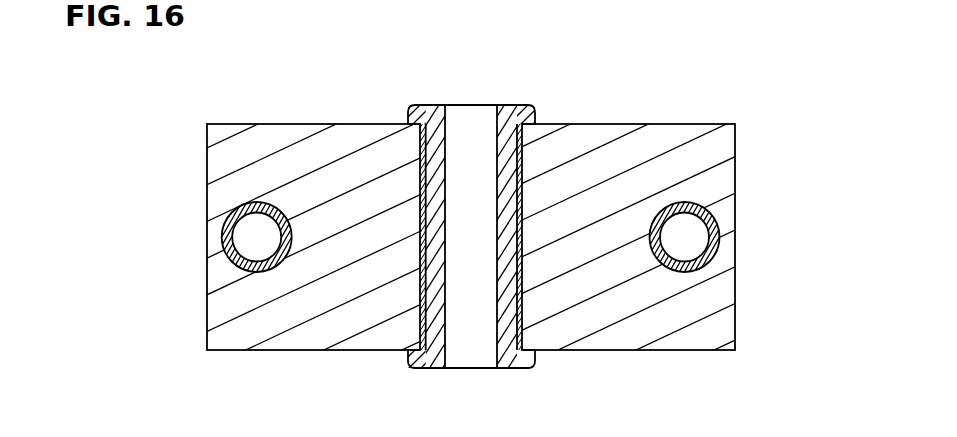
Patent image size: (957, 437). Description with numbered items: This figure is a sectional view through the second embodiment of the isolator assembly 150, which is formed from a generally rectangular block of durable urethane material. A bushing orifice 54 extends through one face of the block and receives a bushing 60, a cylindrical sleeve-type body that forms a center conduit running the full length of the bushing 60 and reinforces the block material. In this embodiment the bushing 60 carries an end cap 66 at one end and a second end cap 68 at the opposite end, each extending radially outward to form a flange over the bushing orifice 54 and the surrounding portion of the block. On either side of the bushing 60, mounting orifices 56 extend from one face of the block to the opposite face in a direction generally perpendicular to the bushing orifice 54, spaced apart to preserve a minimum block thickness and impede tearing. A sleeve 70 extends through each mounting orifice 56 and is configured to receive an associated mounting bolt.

The isolator assembly 150 is at (183, 110).
The bushing orifice 54 is at (422, 180).
The mounting orifices 56 is at (252, 238).
The bushing 60 is at (507, 240).
The end cap 66 is at (528, 107).
The second end cap 68 is at (531, 367).
The sleeve 70 is at (223, 248).